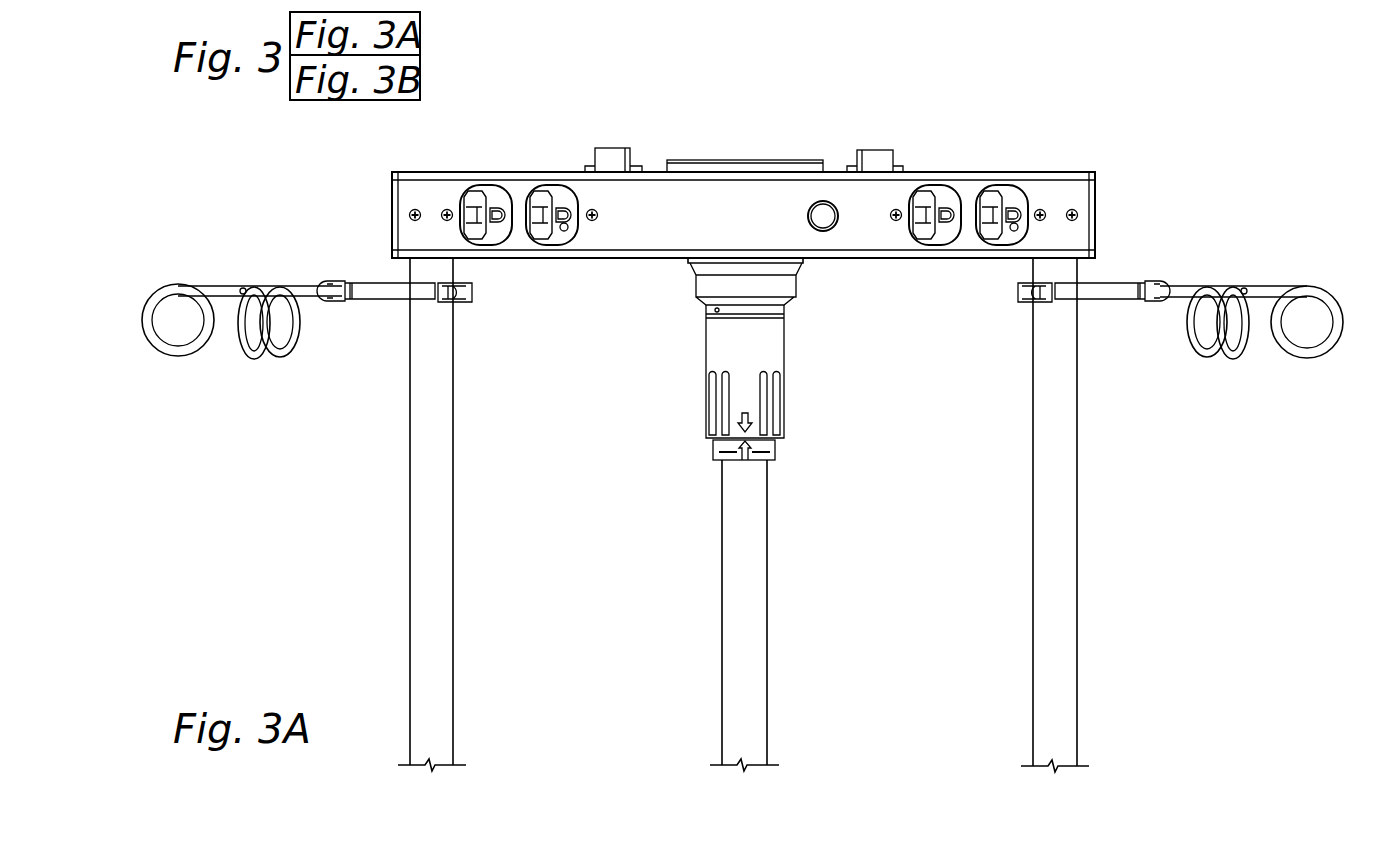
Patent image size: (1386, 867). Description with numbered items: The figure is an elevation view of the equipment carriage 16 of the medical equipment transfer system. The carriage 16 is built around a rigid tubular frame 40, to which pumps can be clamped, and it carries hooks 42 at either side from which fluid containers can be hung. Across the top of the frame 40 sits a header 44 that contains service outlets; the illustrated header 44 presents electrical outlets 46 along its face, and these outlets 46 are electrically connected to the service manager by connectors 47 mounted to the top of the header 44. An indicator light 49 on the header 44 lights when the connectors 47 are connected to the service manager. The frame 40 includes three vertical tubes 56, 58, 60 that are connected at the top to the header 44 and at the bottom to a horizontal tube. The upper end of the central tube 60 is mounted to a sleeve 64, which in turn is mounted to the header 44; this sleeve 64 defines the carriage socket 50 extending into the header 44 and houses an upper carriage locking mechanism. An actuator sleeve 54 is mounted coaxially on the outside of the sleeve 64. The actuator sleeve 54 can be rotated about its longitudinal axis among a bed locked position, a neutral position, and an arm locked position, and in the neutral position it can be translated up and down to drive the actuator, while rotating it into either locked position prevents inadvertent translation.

The equipment carriage 16 is at (1246, 68).
The rigid tubular frame 40 is at (1195, 622).
The hooks 42 is at (190, 287).
The header 44 is at (1097, 172).
The electrical outlets 46 is at (479, 172).
The connectors 47 is at (605, 148).
The indicator light 49 is at (833, 201).
The socket 50 is at (753, 138).
The actuator sleeve 54 is at (707, 377).
The vertical tube 56 is at (410, 515).
The vertical tube 58 is at (1033, 530).
The central tube 60 is at (722, 531).
The sleeve 64 is at (776, 458).